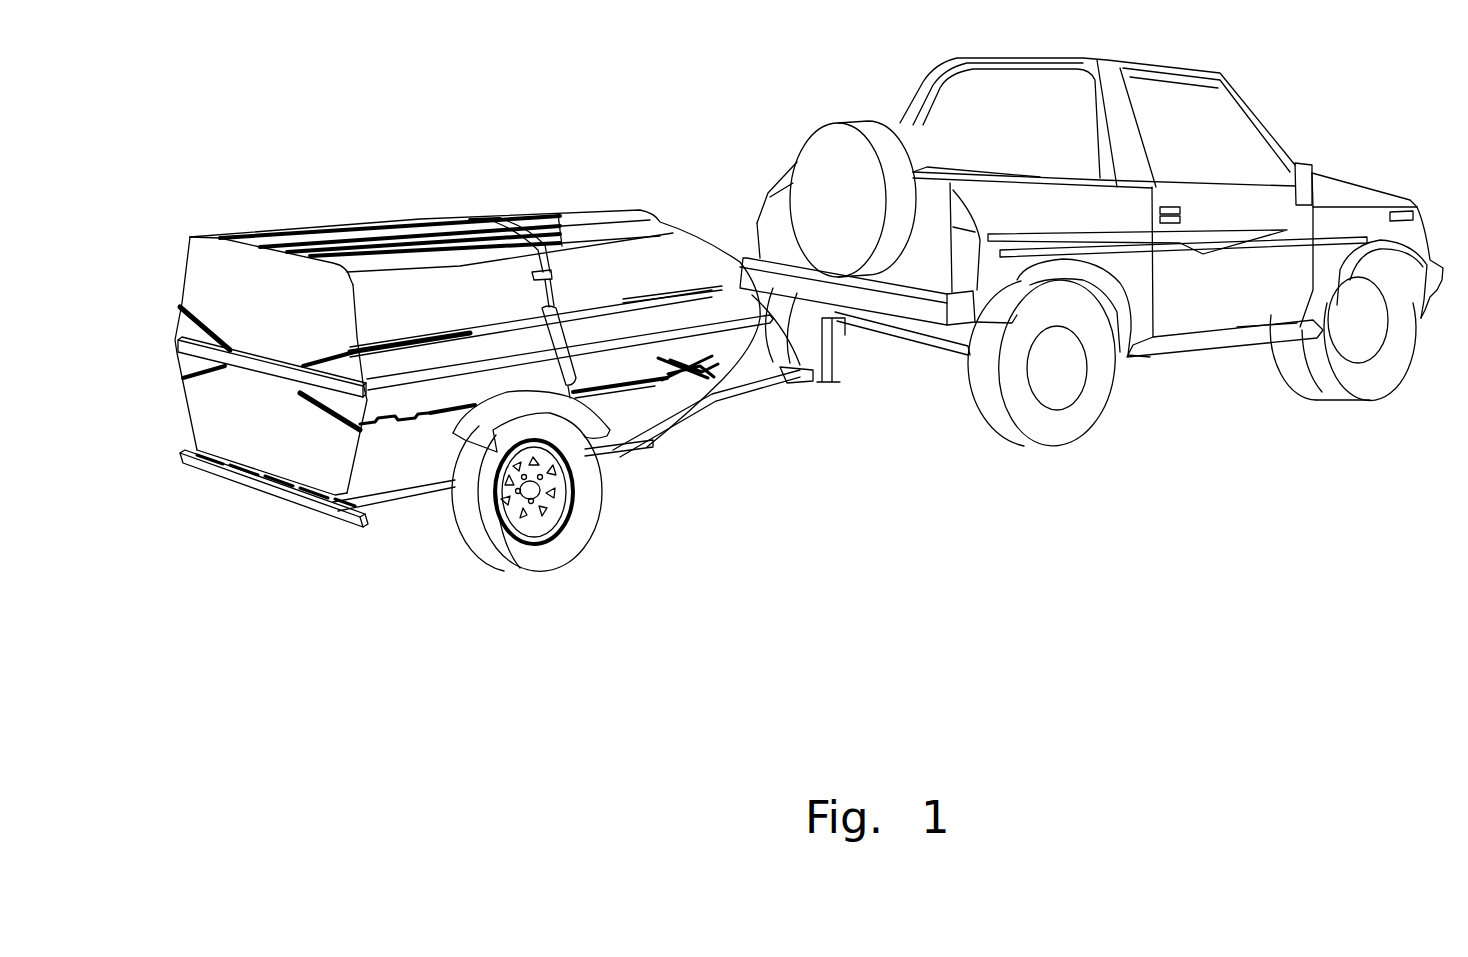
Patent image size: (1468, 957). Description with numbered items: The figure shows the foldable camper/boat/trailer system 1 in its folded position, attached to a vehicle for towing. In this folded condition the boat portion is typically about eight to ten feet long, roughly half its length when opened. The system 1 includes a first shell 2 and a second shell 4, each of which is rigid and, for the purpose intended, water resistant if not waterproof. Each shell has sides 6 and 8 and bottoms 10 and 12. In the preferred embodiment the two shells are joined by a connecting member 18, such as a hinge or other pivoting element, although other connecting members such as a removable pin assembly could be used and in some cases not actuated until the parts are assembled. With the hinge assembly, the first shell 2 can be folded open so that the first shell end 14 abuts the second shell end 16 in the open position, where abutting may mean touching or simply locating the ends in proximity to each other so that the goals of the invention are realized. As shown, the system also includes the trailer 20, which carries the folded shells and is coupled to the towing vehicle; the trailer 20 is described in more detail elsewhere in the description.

The camper/boat/trailer system 1 is at (476, 193).
The first shell 2 is at (318, 250).
The second shell 4 is at (430, 450).
The side 6 is at (642, 402).
The side 8 is at (658, 298).
The bottom 10 is at (430, 232).
The bottom 12 is at (381, 495).
The first shell end 14 is at (273, 337).
The second shell end 16 is at (293, 427).
The connecting member 18 is at (247, 363).
The trailer 20 is at (737, 393).